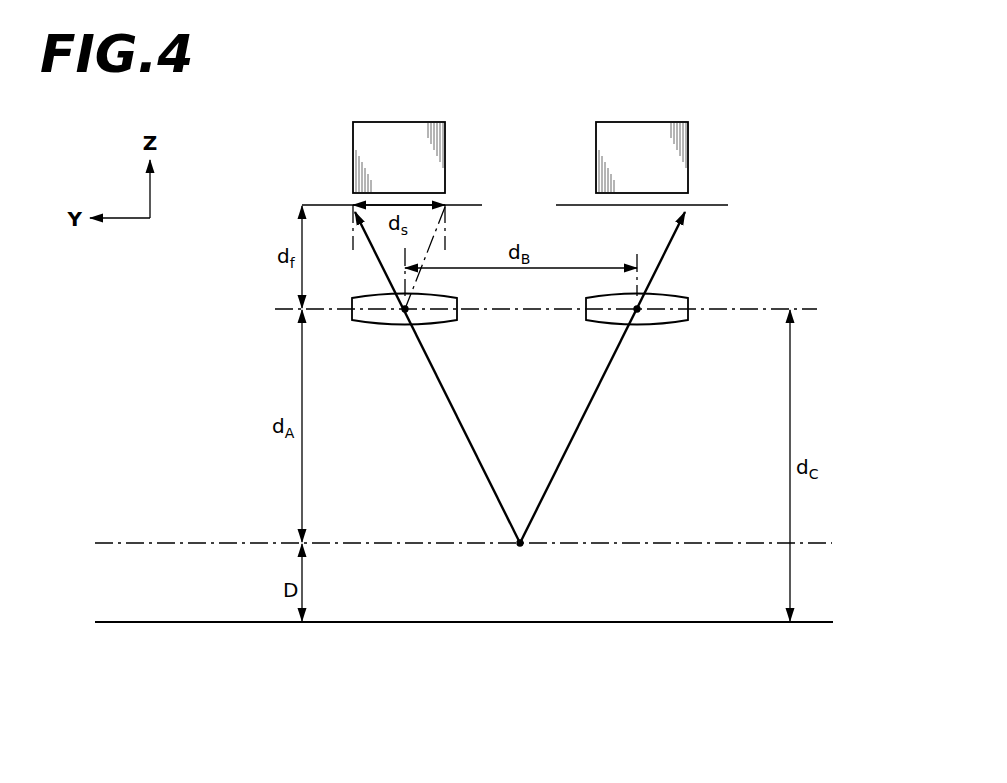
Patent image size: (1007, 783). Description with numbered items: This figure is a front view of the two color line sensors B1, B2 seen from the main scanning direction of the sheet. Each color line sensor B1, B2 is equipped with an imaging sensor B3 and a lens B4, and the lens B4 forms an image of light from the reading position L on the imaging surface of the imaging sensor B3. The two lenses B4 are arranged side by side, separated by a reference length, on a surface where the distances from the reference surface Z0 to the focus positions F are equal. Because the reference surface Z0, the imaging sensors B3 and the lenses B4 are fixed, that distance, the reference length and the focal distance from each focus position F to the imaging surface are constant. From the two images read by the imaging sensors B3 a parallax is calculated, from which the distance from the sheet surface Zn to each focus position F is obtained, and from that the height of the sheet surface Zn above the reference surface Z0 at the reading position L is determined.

The color line sensor B1 is at (638, 99).
The color line sensor B2 is at (401, 99).
The imaging sensor B3 is at (425, 152).
The lens B4 is at (367, 298).
The focus position F is at (403, 312).
The reading position L is at (523, 546).
The sheet surface Zn is at (145, 542).
The reference surface Z0 is at (145, 620).